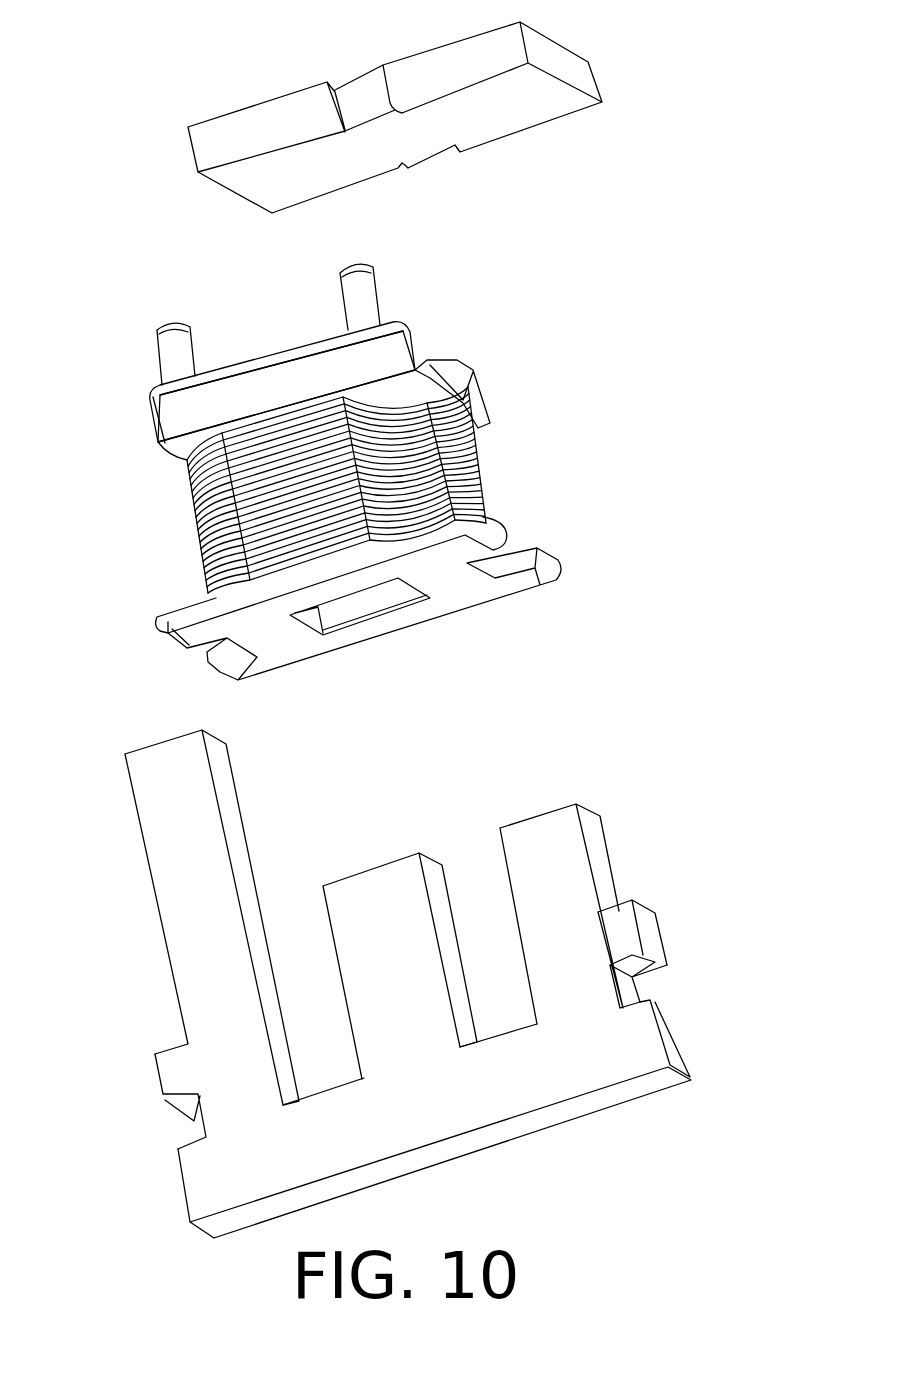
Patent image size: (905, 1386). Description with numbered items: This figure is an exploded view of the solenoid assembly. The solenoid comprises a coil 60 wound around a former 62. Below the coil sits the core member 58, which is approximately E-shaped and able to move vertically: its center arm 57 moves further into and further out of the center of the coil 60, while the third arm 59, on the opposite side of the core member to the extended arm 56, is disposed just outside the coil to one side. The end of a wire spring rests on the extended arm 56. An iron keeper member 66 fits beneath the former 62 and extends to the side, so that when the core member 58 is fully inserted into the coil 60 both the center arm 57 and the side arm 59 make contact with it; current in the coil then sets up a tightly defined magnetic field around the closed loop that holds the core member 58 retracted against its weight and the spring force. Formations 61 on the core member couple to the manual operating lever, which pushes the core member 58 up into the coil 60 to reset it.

The extended arm 56 is at (139, 777).
The center arm 57 is at (372, 874).
The core member 58 is at (481, 1096).
The third arm 59 is at (539, 824).
The coil 60 is at (462, 468).
The formations 61 is at (186, 1173).
The former 62 is at (287, 358).
The iron keeper member 66 is at (510, 122).